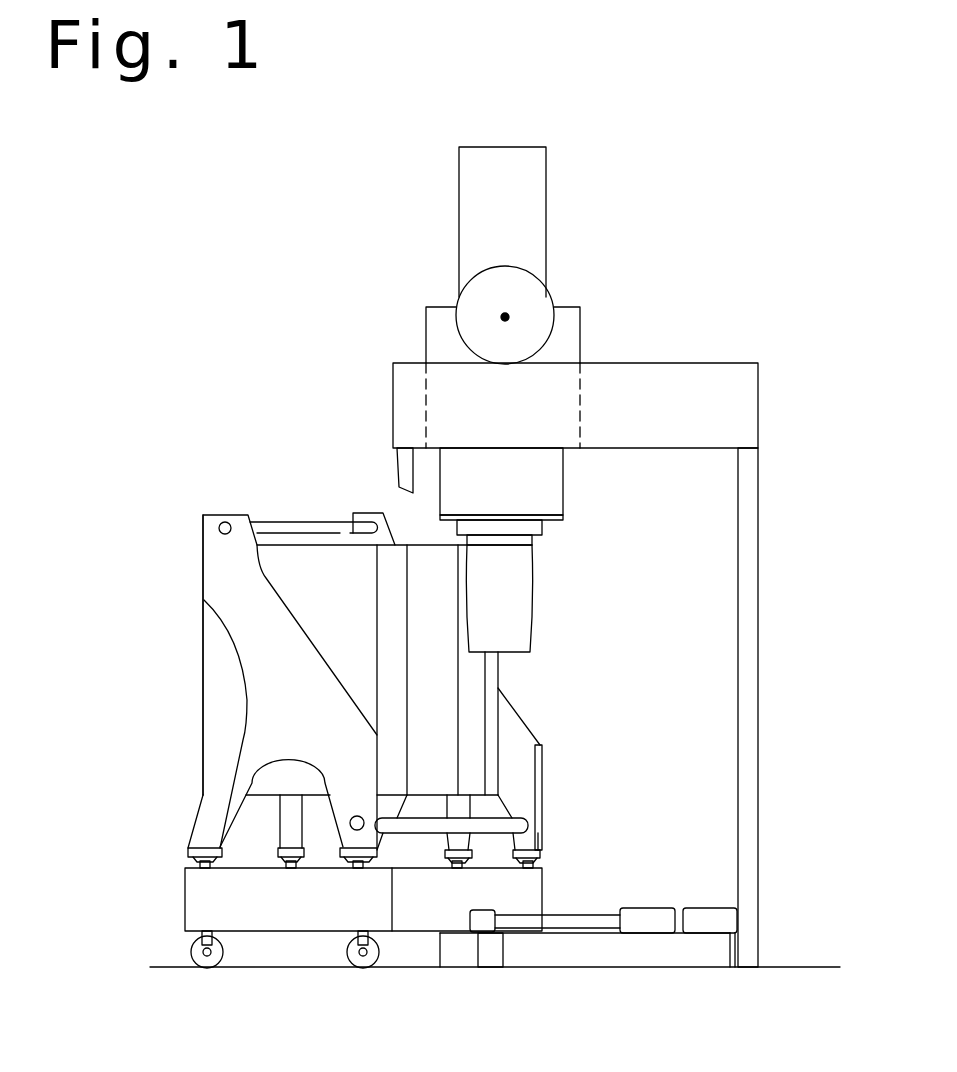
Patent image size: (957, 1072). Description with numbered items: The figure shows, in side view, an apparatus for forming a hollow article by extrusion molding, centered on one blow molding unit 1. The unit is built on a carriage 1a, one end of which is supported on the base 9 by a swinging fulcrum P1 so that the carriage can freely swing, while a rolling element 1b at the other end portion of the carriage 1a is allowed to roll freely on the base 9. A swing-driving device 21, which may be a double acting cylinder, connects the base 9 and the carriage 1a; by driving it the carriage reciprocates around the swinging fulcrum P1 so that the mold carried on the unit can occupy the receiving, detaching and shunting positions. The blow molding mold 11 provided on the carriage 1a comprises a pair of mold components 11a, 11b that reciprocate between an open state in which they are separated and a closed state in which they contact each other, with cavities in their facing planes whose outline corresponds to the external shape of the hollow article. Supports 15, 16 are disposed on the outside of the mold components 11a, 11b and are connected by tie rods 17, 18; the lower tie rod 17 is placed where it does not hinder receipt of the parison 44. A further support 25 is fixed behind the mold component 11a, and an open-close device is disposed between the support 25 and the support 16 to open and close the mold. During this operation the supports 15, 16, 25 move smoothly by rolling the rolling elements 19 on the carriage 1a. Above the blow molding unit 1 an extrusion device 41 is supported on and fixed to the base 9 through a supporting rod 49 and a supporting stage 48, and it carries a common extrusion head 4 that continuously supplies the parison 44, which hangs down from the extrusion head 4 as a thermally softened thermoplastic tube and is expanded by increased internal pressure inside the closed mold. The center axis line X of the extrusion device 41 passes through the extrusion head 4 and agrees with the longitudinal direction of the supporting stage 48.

The blow molding unit 1 is at (192, 655).
The carriage 1a is at (208, 898).
The rolling element 1b is at (222, 950).
The extrusion head 4 is at (548, 483).
The base 9 is at (640, 960).
The blow molding mold 11 is at (325, 530).
The mold component 11a is at (478, 680).
The mold component 11b is at (300, 582).
The support 15 is at (243, 762).
The support 16 is at (542, 787).
The tie rod 17 is at (430, 828).
The tie rod 18 is at (287, 522).
The rolling elements 19 is at (200, 860).
The swing-driving device 21 is at (647, 908).
The support 25 is at (490, 728).
The extrusion device 41 is at (535, 330).
The parison 44 is at (520, 580).
The supporting stage 48 is at (740, 403).
The supporting rod 49 is at (395, 467).
The swinging fulcrum P1 is at (495, 950).
The center axis line X is at (505, 317).